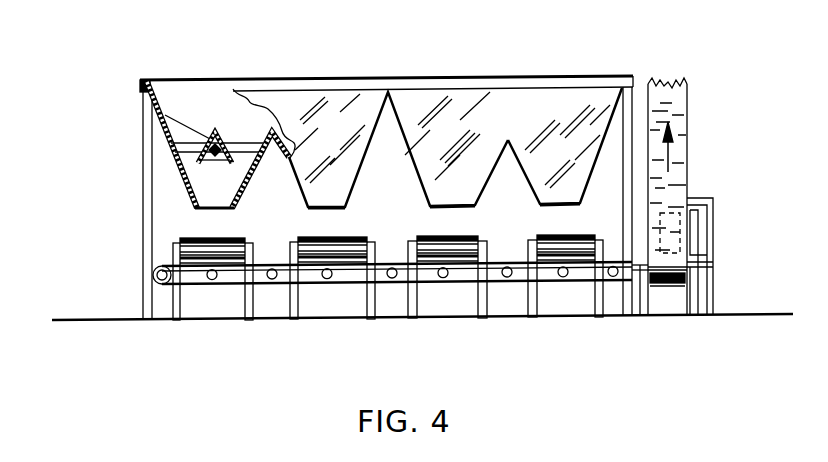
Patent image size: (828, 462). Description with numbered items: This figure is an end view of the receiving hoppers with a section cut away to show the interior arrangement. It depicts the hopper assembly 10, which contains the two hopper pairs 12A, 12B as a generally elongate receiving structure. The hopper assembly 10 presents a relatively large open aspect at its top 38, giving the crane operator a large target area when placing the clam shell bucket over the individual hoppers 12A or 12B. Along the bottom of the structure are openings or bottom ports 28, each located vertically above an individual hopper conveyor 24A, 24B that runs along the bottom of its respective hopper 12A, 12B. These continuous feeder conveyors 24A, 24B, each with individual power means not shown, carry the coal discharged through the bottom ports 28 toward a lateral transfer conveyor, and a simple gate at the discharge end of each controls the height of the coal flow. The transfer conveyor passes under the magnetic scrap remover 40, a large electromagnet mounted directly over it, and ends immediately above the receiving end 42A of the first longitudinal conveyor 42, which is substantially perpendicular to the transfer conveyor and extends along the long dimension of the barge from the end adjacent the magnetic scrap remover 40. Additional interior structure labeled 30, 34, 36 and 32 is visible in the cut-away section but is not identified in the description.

The hopper assembly 10 is at (170, 80).
The top 38 is at (216, 79).
The feed hopper 30 is at (160, 110).
The divider 34 is at (215, 130).
The deflector 36 is at (218, 142).
The outlet gap 32 is at (223, 164).
The hopper pair 12A is at (330, 113).
The hopper pair 12B is at (520, 118).
The bottom port 28 is at (212, 209).
The hopper conveyor 24A is at (222, 237).
The hopper conveyor 24B is at (457, 236).
The first longitudinal conveyor 42 is at (688, 132).
The magnetic scrap remover 40 is at (715, 215).
The receiving end 42A is at (665, 274).